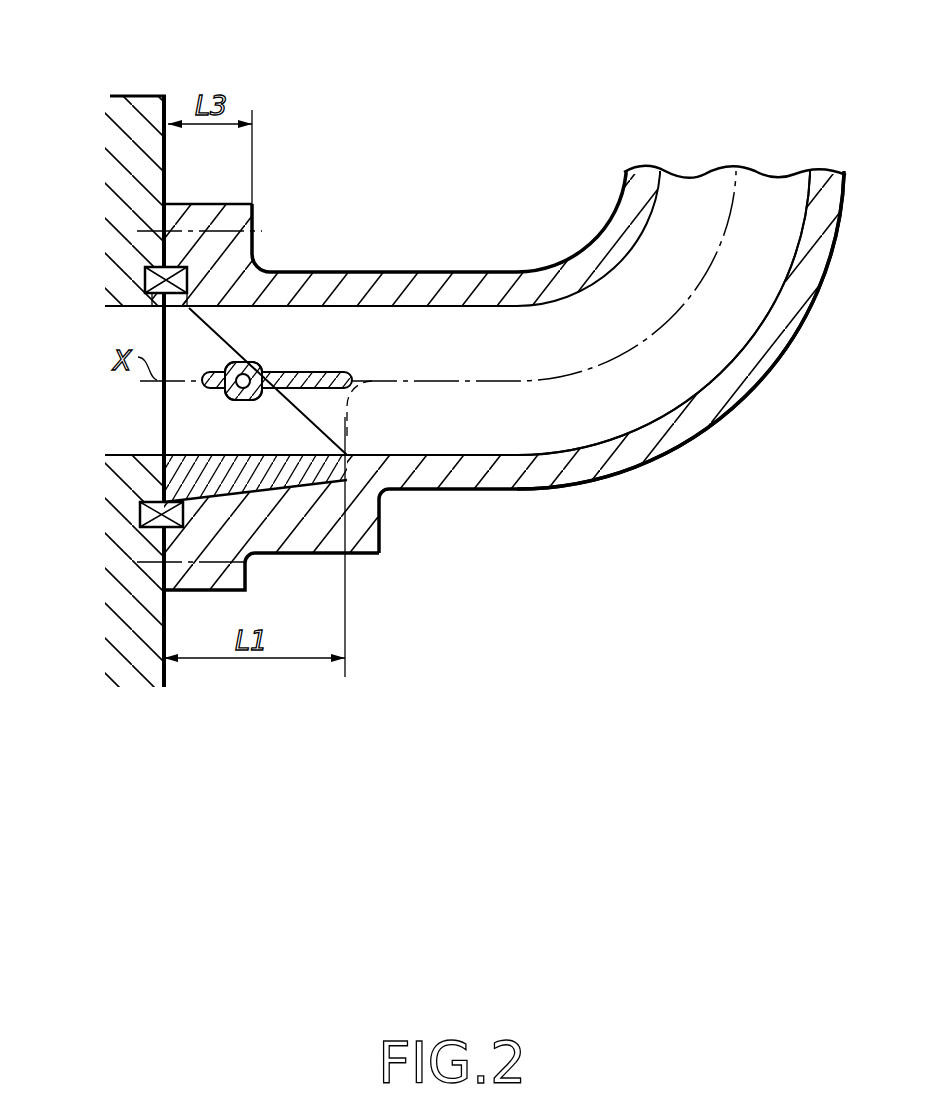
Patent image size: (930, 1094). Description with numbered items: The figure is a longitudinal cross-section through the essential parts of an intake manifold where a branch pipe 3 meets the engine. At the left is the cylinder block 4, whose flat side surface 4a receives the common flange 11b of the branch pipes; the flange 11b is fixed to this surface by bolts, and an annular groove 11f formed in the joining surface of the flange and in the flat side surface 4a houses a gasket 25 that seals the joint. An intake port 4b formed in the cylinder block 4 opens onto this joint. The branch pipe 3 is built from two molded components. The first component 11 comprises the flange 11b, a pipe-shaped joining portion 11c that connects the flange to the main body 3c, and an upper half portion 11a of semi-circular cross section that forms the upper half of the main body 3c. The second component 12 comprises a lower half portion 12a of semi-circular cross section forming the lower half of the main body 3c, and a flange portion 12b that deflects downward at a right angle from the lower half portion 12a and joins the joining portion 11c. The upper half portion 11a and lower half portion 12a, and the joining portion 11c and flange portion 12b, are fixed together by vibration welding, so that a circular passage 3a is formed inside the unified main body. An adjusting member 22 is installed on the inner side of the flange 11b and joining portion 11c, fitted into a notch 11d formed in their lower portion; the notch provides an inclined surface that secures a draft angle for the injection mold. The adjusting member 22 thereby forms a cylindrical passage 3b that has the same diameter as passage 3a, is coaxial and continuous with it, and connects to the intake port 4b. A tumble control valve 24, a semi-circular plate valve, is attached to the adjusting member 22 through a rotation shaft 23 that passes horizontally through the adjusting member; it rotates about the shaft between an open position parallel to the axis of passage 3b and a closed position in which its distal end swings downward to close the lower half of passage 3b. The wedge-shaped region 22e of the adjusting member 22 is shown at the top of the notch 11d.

The branch pipe 3 is at (477, 188).
The passage 3a is at (708, 338).
The passage 3b is at (295, 343).
The main body 3c is at (598, 496).
The cylinder block 4 is at (128, 100).
The flat side surface 4a is at (164, 687).
The intake port 4b is at (133, 451).
The first component 11 is at (497, 272).
The upper half portion 11a is at (428, 306).
The flange 11b is at (200, 208).
The joining portion 11c is at (307, 553).
The notch 11d is at (258, 455).
The annular groove 11f is at (145, 282).
The second component 12 is at (670, 455).
The lower half portion 12a is at (497, 490).
The flange portion 12b is at (362, 540).
The adjusting member 22 is at (157, 470).
The upper surface of wedge member 22e is at (235, 447).
The rotation shaft 23 is at (247, 363).
The tumble control valve 24 is at (312, 370).
The gasket 25 is at (157, 308).